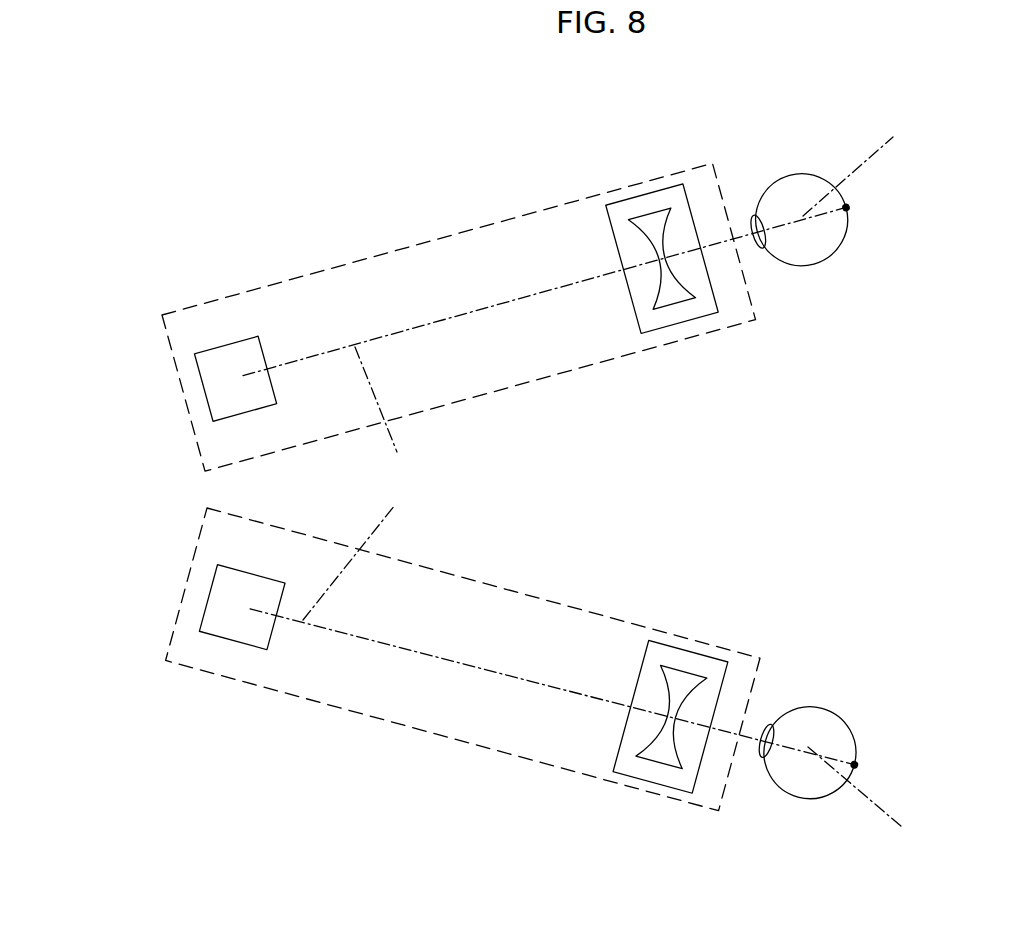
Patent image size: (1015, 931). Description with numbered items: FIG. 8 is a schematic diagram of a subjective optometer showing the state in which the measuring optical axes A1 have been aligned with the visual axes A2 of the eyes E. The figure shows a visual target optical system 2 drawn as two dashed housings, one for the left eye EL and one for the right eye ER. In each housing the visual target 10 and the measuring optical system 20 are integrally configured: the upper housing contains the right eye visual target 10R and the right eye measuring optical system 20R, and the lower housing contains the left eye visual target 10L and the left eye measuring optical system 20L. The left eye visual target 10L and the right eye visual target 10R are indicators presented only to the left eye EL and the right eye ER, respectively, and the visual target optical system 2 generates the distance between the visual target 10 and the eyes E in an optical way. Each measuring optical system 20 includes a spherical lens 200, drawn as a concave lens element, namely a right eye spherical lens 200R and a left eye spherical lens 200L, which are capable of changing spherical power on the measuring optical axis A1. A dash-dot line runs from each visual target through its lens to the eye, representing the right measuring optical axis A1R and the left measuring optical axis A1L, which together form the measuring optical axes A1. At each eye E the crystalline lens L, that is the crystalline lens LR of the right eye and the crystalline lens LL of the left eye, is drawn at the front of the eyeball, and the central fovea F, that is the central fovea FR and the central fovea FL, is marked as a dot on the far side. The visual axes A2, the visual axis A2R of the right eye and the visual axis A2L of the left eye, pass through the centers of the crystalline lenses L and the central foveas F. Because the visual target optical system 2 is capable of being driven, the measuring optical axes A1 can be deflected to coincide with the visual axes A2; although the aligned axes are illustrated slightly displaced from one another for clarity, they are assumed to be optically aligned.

The visual target optical system 2 is at (196, 555).
The visual target 10 is at (260, 475).
The right eye visual target 10R is at (260, 355).
The left eye visual target 10L is at (265, 603).
The measuring optical system 20 is at (610, 488).
The right eye measuring optical system 20R is at (605, 274).
The left eye measuring optical system 20L is at (618, 702).
The spherical lens 200 is at (679, 494).
The right eye spherical lens 200R is at (657, 308).
The left eye spherical lens 200L is at (705, 685).
The measuring optical axis A1 is at (548, 489).
The right measuring optical axis A1R is at (395, 411).
The left measuring optical axis A1L is at (370, 551).
The visual axis A2 is at (889, 488).
The visual axis of the right eye A2R is at (888, 165).
The visual axis of the left eye A2L is at (891, 804).
The eye E is at (825, 486).
The right eye ER is at (827, 259).
The left eye EL is at (833, 713).
The crystalline lens L is at (792, 486).
The crystalline lens of the right eye LR is at (760, 247).
The crystalline lens of the left eye LL is at (768, 724).
The central fovea F is at (921, 484).
The central fovea of the right eye FR is at (845, 208).
The central fovea of the left eye FL is at (853, 762).